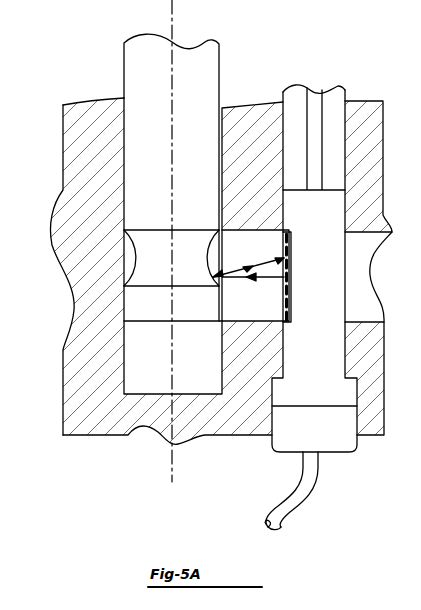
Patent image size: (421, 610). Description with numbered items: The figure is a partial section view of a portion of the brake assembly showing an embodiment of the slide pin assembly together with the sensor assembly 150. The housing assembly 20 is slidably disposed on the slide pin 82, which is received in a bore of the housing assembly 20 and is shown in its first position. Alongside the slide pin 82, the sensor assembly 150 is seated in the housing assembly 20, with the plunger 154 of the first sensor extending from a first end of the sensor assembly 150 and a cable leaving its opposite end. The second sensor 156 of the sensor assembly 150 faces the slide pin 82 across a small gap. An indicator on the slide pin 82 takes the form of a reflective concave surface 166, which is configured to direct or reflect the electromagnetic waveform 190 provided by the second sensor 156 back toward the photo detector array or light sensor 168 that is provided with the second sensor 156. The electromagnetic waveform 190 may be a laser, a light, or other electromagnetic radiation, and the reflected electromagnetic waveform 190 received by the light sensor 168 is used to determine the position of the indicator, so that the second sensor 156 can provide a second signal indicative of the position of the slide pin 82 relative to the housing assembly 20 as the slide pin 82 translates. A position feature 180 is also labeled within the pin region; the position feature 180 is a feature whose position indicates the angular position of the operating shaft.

The housing assembly 20 is at (72, 145).
The slide pin 82 is at (198, 77).
The plunger 154 is at (316, 100).
The second sensor 156 is at (292, 238).
The reflective concave surface 166 is at (208, 252).
The photo detector array or light sensor 168 is at (292, 257).
The position feature 180 is at (188, 250).
The electromagnetic waveform 190 is at (232, 279).
The sensor assembly 150 is at (327, 455).